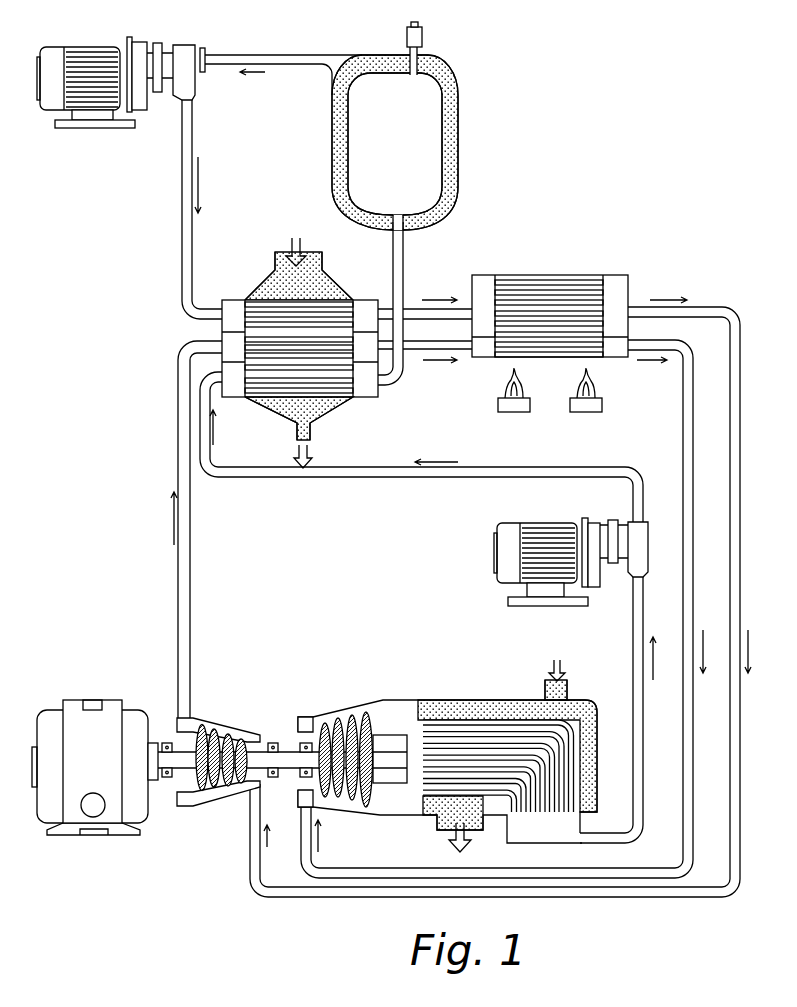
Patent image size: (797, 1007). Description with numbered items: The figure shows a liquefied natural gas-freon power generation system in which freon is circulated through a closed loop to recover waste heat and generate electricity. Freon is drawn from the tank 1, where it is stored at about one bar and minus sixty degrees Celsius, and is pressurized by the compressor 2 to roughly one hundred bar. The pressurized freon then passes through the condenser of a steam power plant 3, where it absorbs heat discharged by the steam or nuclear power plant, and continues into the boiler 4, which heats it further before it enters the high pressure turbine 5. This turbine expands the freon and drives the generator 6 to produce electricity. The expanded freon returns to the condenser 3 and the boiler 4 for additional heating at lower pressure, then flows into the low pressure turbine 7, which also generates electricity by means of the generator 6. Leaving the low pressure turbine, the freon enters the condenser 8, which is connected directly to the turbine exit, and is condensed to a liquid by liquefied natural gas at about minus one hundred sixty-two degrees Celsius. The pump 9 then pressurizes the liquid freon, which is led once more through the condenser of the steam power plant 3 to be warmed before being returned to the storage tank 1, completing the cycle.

The tank 1 is at (395, 126).
The compressor 2 is at (121, 70).
The condenser of a steam power plant 3 is at (320, 343).
The boiler 4 is at (550, 326).
The high pressure turbine 5 is at (218, 749).
The generator 6 is at (95, 746).
The low pressure turbine 7 is at (447, 756).
The condenser 8 is at (507, 748).
The pump 9 is at (571, 546).